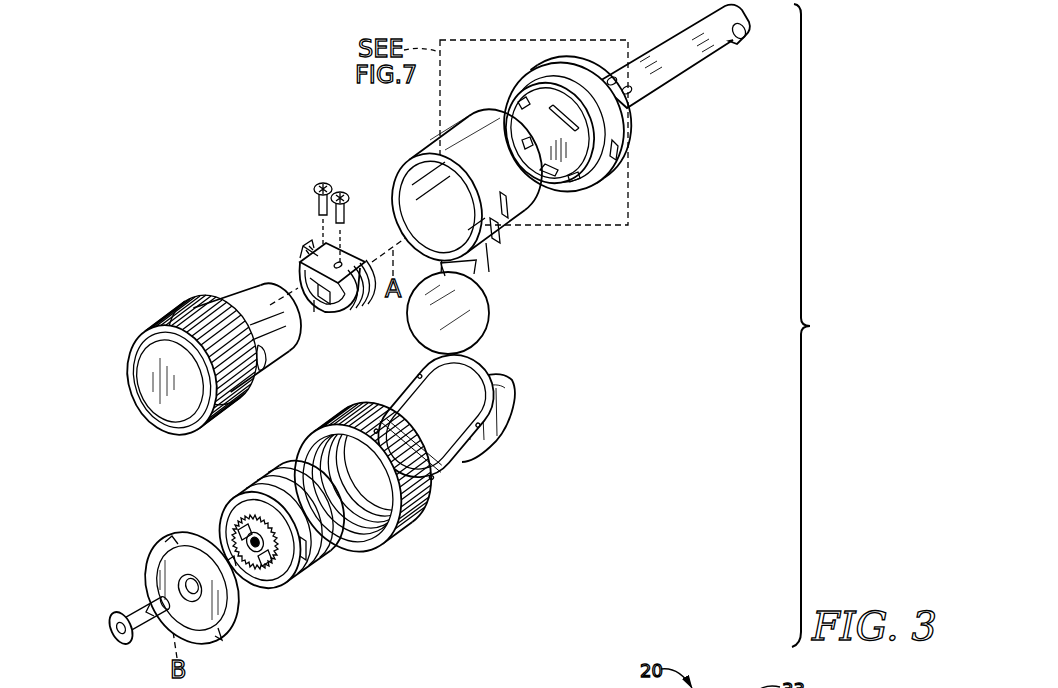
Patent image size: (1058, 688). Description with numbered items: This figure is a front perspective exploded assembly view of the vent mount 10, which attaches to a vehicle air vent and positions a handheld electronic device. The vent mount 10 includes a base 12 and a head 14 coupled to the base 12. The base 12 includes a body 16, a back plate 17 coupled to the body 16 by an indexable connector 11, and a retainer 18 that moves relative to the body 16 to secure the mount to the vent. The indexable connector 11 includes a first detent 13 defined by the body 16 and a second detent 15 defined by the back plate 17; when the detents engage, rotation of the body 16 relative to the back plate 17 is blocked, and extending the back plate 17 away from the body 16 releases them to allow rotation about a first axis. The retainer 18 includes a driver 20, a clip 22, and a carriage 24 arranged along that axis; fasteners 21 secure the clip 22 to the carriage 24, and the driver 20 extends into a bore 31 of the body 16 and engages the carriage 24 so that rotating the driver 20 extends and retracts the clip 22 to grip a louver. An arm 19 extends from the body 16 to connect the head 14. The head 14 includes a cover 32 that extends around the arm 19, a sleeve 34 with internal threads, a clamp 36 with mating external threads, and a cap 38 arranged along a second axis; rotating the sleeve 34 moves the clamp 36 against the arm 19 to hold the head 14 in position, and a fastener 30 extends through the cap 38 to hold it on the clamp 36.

The vent mount 10 is at (145, 109).
The indexable connector 11 is at (593, 179).
The base 12 is at (419, 168).
The first detent 13 is at (550, 207).
The head 14 is at (260, 529).
The second detent 15 is at (587, 183).
The body 16 is at (494, 212).
The back plate 17 is at (608, 182).
The retainer 18 is at (712, 58).
The arm 19 is at (494, 297).
The driver 20 is at (162, 306).
The fasteners 21 is at (312, 178).
The clip 22 is at (657, 43).
The carriage 24 is at (300, 244).
The fastener 30 is at (113, 606).
The bore 31 is at (432, 193).
The cover 32 is at (498, 451).
The sleeve 34 is at (424, 528).
The clamp 36 is at (316, 586).
The cap 38 is at (241, 620).